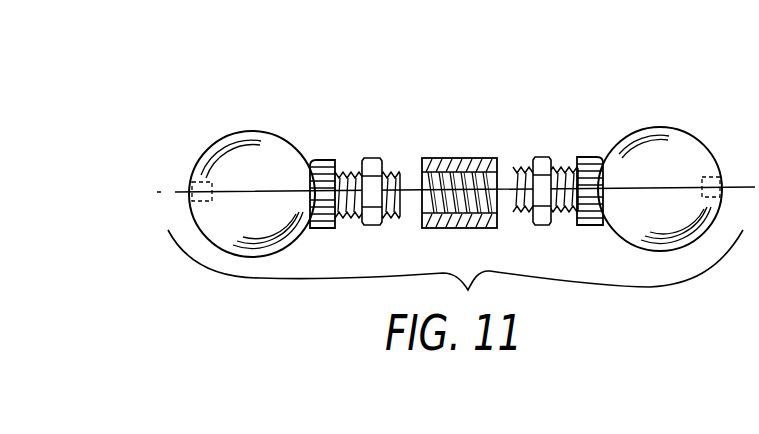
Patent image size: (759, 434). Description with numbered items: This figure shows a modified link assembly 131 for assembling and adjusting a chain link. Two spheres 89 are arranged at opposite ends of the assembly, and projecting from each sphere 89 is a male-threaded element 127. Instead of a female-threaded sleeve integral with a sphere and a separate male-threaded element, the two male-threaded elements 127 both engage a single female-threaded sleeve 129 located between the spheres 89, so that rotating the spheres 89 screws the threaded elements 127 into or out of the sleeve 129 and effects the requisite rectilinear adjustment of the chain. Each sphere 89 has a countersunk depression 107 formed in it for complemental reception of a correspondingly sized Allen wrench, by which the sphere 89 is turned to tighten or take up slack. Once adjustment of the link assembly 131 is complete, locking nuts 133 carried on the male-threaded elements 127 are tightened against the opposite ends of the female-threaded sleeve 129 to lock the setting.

The sphere 89 is at (270, 183).
The depression 107 is at (190, 187).
The male-threaded element 127 is at (347, 169).
The female-threaded sleeve 129 is at (470, 157).
The link assembly 131 is at (477, 87).
The locking nut 133 is at (367, 158).